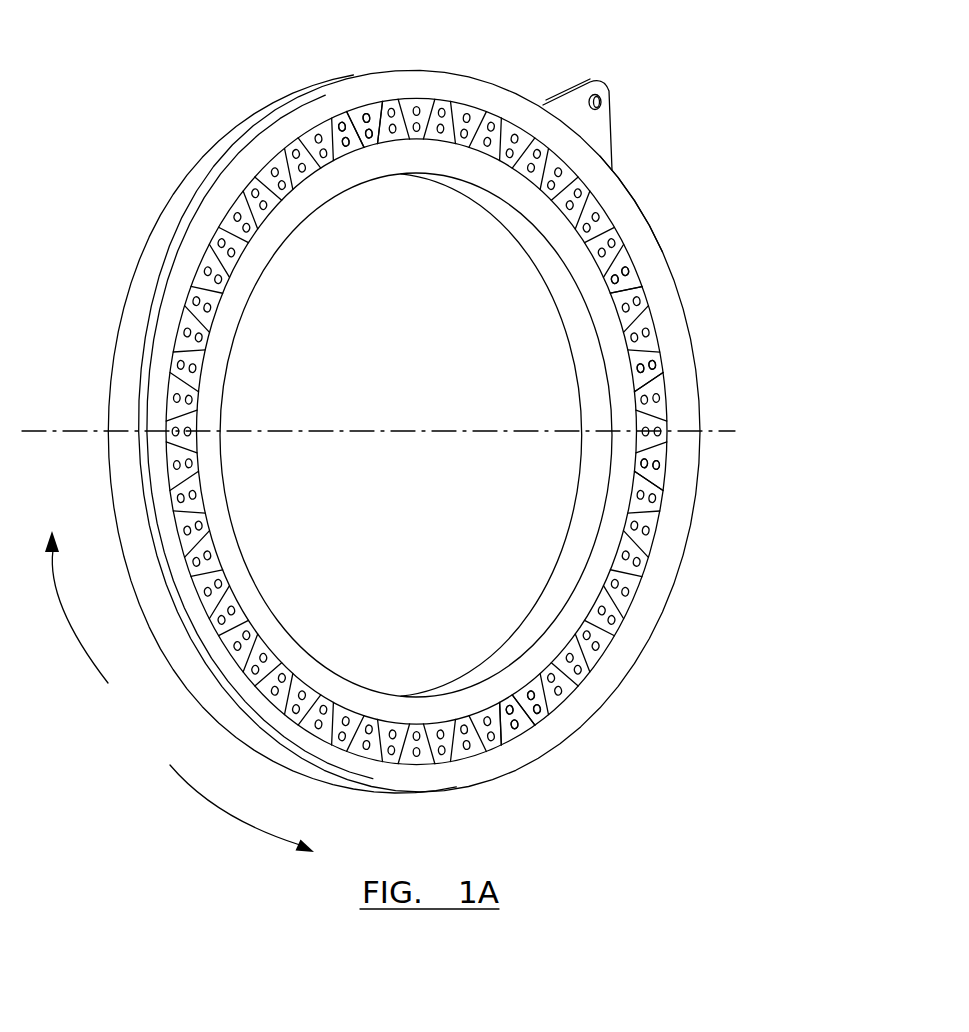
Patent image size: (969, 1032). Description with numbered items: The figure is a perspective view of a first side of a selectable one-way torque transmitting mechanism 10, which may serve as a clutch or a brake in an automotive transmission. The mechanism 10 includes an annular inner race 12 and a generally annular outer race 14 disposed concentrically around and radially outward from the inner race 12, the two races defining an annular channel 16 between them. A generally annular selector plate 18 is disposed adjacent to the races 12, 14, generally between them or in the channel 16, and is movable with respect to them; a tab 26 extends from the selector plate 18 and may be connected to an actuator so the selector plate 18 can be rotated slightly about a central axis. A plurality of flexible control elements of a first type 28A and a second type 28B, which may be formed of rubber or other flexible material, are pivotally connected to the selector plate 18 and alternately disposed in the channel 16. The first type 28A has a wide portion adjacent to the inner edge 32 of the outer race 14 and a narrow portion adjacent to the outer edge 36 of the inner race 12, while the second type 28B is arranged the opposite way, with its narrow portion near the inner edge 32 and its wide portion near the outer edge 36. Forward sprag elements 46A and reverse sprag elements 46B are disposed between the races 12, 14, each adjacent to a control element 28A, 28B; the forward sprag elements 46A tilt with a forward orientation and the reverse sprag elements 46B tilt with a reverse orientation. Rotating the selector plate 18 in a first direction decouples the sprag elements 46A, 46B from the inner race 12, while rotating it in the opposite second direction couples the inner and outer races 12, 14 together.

The selectable one-way torque transmitting mechanism 10 is at (412, 436).
The inner race 12 is at (600, 552).
The outer race 14 is at (650, 612).
The annular channel 16 is at (657, 462).
The selector plate 18 is at (600, 128).
The tab 26 is at (574, 110).
The first type of flexible control element 28A is at (515, 733).
The second type of flexible control element 28B is at (533, 712).
The inner edge of the outer race 32 is at (638, 284).
The outer edge of the inner race 36 is at (637, 366).
The forward sprag element 46A is at (352, 115).
The reverse sprag element 46B is at (332, 127).